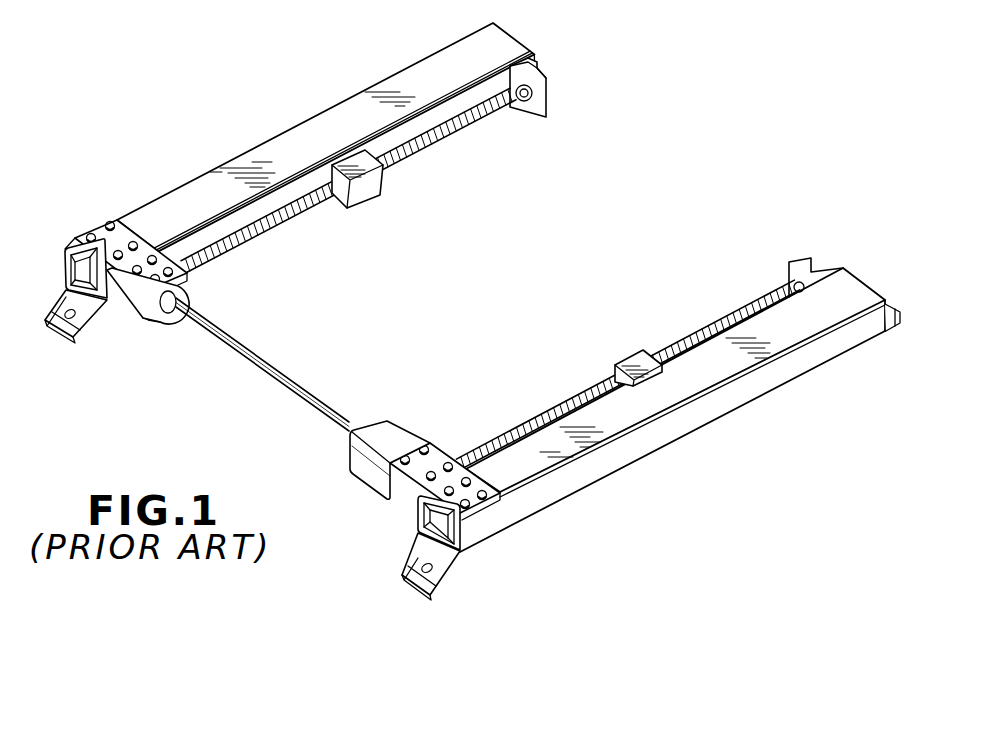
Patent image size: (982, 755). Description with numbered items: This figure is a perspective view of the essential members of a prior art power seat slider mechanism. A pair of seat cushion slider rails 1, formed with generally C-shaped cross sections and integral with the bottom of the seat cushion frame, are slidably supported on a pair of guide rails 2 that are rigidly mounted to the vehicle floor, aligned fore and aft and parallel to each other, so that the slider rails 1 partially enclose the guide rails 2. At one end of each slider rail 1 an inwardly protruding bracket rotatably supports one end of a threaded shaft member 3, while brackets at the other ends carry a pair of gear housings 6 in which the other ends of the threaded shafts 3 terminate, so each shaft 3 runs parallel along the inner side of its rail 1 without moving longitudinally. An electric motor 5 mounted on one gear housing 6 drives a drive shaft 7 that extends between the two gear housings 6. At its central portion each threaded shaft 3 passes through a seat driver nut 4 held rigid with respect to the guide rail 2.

The seat cushion slider rail 1 is at (277, 136).
The guide rail 2 is at (60, 290).
The threaded shaft member 3 is at (294, 224).
The seat driver nut 4 is at (366, 183).
The electric motor 5 is at (386, 433).
The gear housing 6 is at (133, 308).
The drive shaft 7 is at (262, 375).